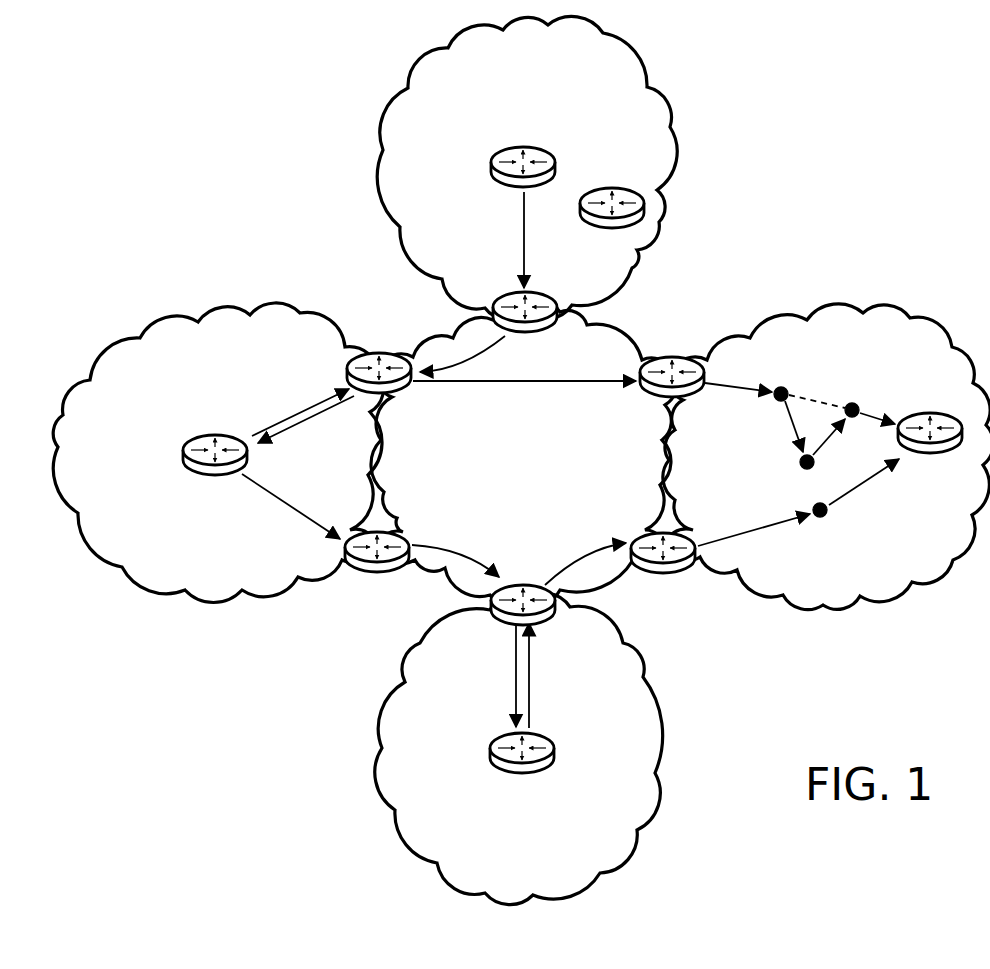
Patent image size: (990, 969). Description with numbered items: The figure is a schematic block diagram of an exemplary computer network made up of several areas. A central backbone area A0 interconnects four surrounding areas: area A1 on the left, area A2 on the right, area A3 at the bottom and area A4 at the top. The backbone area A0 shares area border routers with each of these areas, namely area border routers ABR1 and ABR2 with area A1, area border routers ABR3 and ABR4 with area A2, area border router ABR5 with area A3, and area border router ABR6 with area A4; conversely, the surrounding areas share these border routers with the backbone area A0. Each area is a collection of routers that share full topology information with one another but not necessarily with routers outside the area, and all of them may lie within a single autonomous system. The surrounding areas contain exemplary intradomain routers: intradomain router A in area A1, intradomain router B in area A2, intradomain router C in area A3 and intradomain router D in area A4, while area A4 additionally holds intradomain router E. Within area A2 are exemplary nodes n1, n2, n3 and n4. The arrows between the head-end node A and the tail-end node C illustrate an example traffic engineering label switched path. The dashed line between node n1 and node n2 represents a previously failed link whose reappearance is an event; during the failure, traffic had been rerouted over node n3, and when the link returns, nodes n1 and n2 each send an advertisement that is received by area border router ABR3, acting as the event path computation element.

The area A4 is at (527, 168).
The area A1 is at (218, 453).
The backbone area A0 is at (523, 453).
The area A2 is at (826, 457).
The area A3 is at (519, 749).
The intradomain router D is at (505, 151).
The intradomain router E is at (612, 187).
The intradomain router A is at (193, 462).
The intradomain router B is at (930, 459).
The intradomain router C is at (540, 765).
The area border router ABR1 is at (386, 353).
The area border router ABR2 is at (364, 574).
The area border router ABR3 is at (678, 355).
The area border router ABR4 is at (673, 575).
The area border router ABR5 is at (483, 614).
The area border router ABR6 is at (567, 302).
The node n1 is at (788, 378).
The node n2 is at (867, 396).
The node n3 is at (790, 464).
The node n4 is at (840, 522).